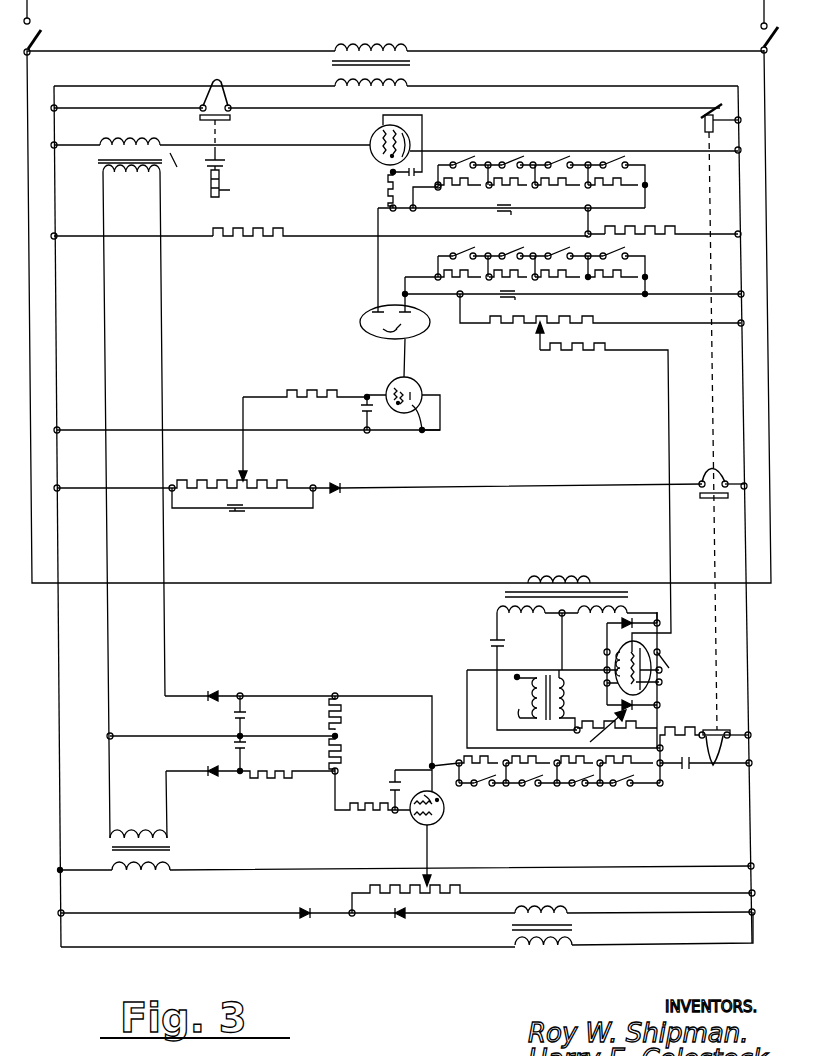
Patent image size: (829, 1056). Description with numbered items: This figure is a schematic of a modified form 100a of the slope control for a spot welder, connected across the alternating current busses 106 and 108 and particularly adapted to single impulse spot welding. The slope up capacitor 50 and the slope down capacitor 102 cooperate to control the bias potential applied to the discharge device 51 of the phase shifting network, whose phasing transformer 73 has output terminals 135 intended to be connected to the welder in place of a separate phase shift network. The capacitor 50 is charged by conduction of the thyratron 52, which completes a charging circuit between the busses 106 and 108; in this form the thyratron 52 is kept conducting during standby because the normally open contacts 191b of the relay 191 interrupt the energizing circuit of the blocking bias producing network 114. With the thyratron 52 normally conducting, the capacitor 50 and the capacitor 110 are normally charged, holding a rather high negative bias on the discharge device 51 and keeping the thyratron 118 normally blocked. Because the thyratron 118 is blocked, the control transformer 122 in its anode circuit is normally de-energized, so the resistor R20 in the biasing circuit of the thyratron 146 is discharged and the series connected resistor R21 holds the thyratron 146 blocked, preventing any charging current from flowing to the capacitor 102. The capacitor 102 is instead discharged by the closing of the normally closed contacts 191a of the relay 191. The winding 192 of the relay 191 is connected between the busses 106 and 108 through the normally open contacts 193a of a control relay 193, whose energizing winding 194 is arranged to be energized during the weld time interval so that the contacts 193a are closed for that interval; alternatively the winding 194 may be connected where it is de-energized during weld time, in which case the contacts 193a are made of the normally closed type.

The modified form of slope control 100a is at (449, 42).
The contacts of control relay 193a is at (209, 106).
The control relay 193 is at (224, 160).
The energizing winding of control relay 194 is at (224, 180).
The control transformer 122 is at (146, 488).
The thyratron 118 is at (372, 158).
The relay winding 192 is at (702, 120).
The capacitor 110 is at (512, 213).
The alternating current bus 106 is at (738, 262).
The alternating current bus 108 is at (78, 338).
The slope up capacitor 50 is at (516, 299).
The thyratron 52 is at (418, 381).
The bias voltage establishing network 114 is at (268, 482).
The relay 191 is at (712, 402).
The normally open relay contacts 191b is at (712, 471).
The phasing transformer 73 is at (536, 685).
The output terminals of phasing transformer 135 is at (548, 657).
The discharge device 51 is at (650, 678).
The resistor R20 is at (343, 714).
The resistor R21 is at (343, 748).
The thyratron 146 is at (410, 820).
The slope down capacitor 102 is at (683, 770).
The normally closed relay contacts 191a is at (704, 760).